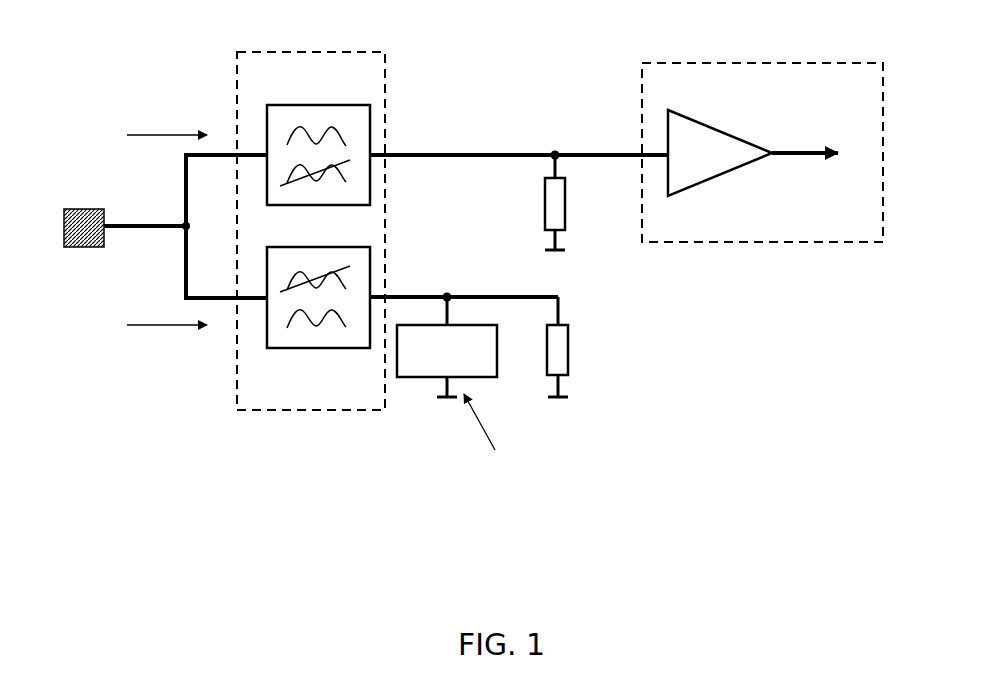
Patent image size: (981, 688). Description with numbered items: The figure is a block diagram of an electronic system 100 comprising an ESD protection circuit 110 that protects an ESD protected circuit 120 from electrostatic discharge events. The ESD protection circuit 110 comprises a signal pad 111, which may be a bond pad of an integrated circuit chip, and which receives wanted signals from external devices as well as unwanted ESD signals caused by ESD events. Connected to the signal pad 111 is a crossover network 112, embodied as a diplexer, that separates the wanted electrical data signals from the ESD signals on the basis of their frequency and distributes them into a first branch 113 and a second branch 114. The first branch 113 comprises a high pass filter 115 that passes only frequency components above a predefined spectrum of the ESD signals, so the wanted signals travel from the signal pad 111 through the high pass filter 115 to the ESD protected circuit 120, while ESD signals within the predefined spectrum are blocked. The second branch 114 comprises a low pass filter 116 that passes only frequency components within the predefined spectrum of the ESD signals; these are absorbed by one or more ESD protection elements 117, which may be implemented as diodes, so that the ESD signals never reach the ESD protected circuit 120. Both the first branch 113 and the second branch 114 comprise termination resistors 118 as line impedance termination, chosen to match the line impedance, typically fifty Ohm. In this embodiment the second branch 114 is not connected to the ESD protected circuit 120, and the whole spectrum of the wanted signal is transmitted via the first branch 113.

The electronic system 100 is at (887, 607).
The ESD protection circuit 110 is at (155, 72).
The signal pad 111 is at (67, 248).
The crossover network 112 is at (385, 86).
The first branch 113 is at (162, 134).
The second branch 114 is at (162, 326).
The high pass filter 115 is at (371, 193).
The low pass filter 116 is at (371, 281).
The ESD protection elements 117 is at (486, 377).
The termination resistors 118 is at (545, 207).
The ESD protected circuit 120 is at (820, 244).